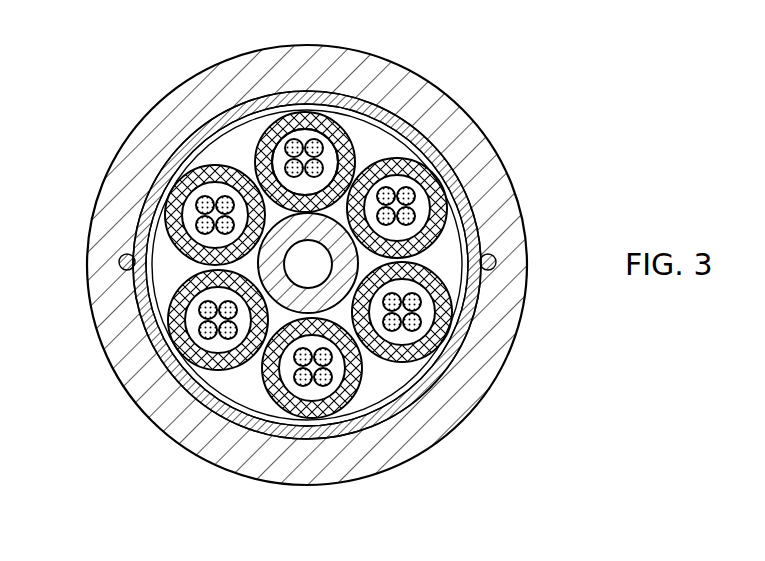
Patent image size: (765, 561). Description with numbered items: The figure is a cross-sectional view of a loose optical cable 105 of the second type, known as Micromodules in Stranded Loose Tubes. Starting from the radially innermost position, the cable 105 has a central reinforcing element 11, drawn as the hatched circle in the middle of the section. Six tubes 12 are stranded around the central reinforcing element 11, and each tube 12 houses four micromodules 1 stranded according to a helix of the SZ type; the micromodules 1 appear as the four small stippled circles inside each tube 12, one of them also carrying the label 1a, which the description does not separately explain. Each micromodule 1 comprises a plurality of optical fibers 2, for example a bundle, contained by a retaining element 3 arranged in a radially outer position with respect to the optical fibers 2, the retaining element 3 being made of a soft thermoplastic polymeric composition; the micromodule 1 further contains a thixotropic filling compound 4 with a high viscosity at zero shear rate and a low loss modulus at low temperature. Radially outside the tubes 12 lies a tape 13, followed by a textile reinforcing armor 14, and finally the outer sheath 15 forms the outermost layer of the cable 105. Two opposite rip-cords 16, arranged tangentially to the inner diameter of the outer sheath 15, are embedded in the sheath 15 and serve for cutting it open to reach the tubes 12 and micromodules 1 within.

The micromodule 1 is at (337, 106).
The conductor core 1a is at (284, 152).
The optical fibers 2 is at (324, 148).
The retaining element 3 is at (312, 140).
The thixotropic filling compound 4 is at (340, 115).
The central reinforcing element 11 is at (305, 313).
The tubes 12 is at (250, 165).
The tape 13 is at (455, 333).
The textile reinforcing armor 14 is at (472, 308).
The outer sheath 15 is at (96, 333).
The rip-cords 16 is at (120, 260).
The optical cable 105 is at (309, 261).